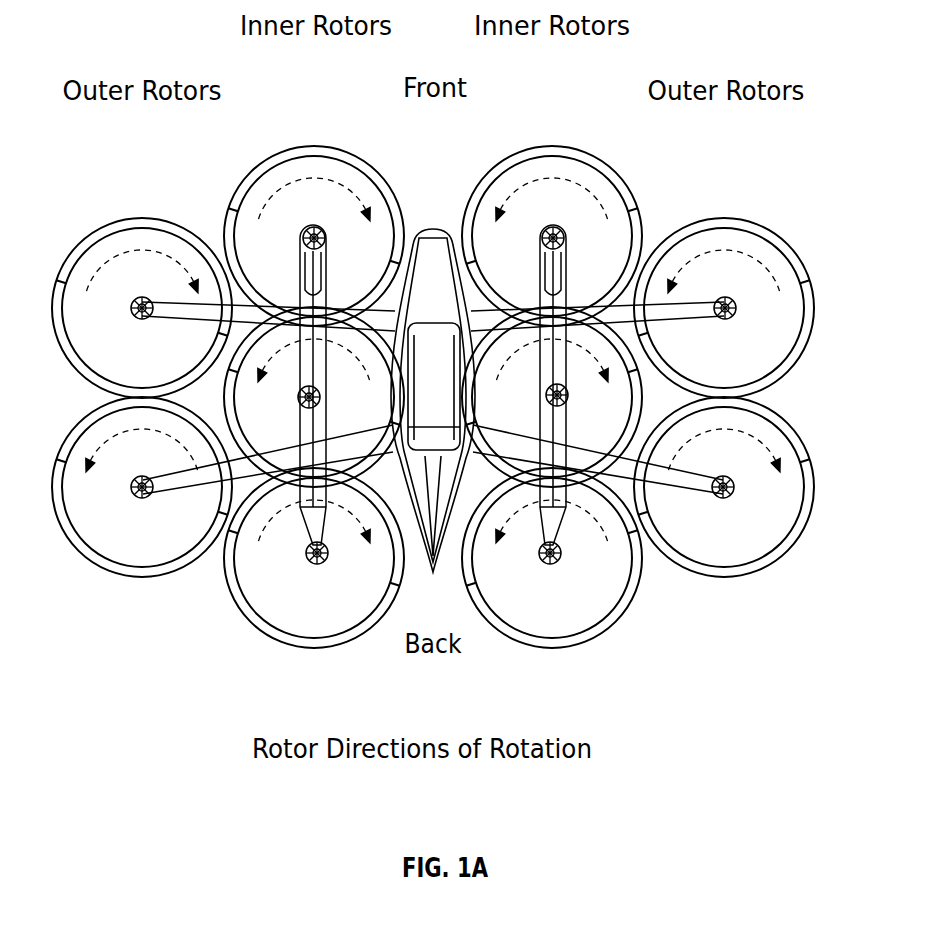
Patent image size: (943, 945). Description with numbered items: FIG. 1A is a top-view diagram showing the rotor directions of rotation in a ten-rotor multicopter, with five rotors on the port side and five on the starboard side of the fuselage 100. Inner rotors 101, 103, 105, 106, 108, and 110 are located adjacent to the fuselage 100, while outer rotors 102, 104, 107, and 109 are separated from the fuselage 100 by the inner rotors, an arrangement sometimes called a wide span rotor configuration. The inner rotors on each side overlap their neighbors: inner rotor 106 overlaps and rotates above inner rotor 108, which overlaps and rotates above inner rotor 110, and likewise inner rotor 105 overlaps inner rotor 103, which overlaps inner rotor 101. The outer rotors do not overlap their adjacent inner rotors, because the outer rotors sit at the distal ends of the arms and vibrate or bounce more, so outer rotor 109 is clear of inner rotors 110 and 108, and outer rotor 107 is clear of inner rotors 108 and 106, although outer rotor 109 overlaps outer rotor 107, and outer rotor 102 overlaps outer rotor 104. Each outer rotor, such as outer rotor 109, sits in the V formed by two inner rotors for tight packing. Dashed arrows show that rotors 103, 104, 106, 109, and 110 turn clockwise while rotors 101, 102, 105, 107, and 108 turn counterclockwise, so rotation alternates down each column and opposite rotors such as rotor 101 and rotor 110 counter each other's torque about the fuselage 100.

The fuselage 100 is at (433, 230).
The inner rotor 101 is at (560, 147).
The outer rotor 102 is at (727, 218).
The inner rotor 103 is at (532, 308).
The outer rotor 104 is at (723, 578).
The inner rotor 105 is at (550, 650).
The inner rotor 106 is at (318, 650).
The outer rotor 107 is at (143, 578).
The inner rotor 108 is at (336, 310).
The outer rotor 109 is at (145, 218).
The inner rotor 110 is at (316, 147).